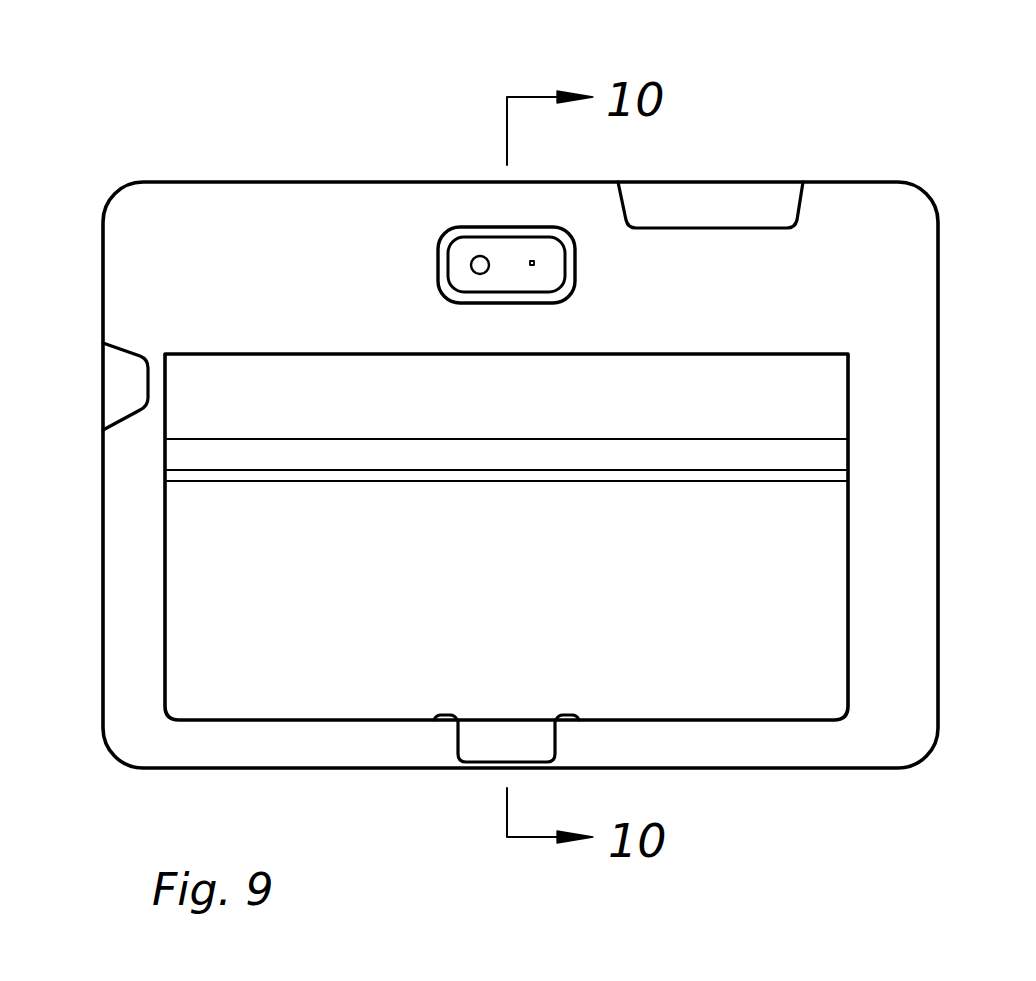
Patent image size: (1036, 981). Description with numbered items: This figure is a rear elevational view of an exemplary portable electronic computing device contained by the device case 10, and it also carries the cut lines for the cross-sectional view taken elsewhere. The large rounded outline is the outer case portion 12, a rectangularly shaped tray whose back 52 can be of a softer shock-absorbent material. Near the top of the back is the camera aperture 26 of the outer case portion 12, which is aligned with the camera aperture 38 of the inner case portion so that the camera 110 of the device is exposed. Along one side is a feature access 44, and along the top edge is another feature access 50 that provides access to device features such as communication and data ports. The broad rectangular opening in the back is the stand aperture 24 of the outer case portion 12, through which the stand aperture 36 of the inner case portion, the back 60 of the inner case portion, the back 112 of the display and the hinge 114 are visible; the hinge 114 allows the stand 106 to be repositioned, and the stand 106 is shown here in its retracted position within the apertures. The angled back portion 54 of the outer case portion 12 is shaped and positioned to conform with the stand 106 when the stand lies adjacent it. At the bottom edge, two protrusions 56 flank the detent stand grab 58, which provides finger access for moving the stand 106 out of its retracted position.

The device case 10 is at (190, 80).
The outer case portion 12 is at (385, 137).
The stand aperture 24 is at (758, 440).
The camera aperture 26 is at (448, 294).
The stand aperture 36 is at (707, 470).
The camera aperture 38 is at (568, 268).
The feature access 44 is at (125, 380).
The feature access 50 is at (738, 207).
The back of outer case portion 52 is at (888, 250).
The angled back portion of outer case portion 54 is at (812, 400).
The protrusions 56 is at (440, 715).
The detent stand grab 58 is at (510, 735).
The back of inner case portion 60 is at (498, 462).
The stand 106 is at (805, 640).
The camera 110 is at (458, 254).
The back of display 112 is at (636, 475).
The hinge 114 is at (563, 483).